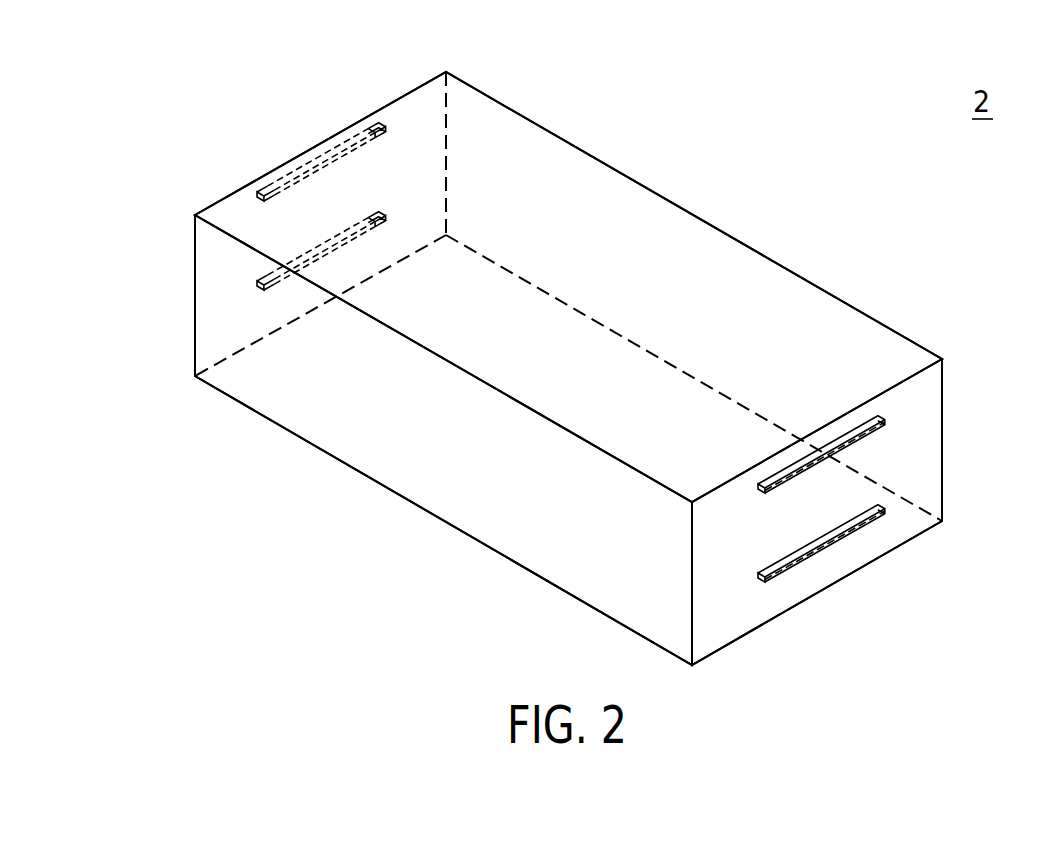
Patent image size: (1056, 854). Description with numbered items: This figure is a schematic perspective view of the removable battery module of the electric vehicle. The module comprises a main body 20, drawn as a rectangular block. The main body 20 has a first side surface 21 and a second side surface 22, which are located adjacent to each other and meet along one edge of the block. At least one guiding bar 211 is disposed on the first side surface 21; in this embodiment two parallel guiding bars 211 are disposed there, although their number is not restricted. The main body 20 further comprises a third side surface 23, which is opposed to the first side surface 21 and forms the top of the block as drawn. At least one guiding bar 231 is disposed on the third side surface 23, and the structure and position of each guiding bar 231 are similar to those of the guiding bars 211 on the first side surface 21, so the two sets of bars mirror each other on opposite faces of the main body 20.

The main body 20 is at (610, 192).
The first side surface 21 is at (887, 535).
The guiding bar 211 is at (823, 455).
The second side surface 22 is at (372, 452).
The third side surface 23 is at (427, 97).
The guiding bar 231 is at (295, 173).